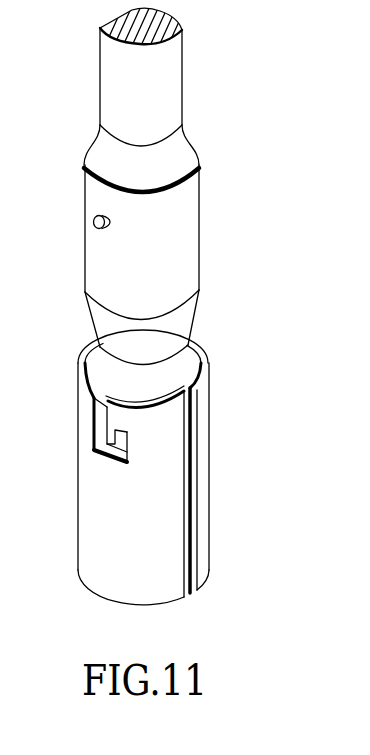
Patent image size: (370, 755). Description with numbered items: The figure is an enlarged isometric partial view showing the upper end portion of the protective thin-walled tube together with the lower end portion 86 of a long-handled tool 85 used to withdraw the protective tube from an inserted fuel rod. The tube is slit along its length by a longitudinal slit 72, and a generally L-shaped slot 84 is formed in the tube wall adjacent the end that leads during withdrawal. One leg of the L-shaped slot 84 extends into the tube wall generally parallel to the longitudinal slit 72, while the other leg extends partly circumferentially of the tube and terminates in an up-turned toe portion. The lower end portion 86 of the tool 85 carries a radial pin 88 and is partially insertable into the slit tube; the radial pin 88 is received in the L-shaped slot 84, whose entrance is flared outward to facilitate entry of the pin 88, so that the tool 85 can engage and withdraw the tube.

The long-handled tool 85 is at (116, 88).
The lower end portion 86 is at (178, 217).
The radial pin 88 is at (110, 213).
The L-shaped slot 84 is at (100, 400).
The longitudinal slit 72 is at (192, 478).